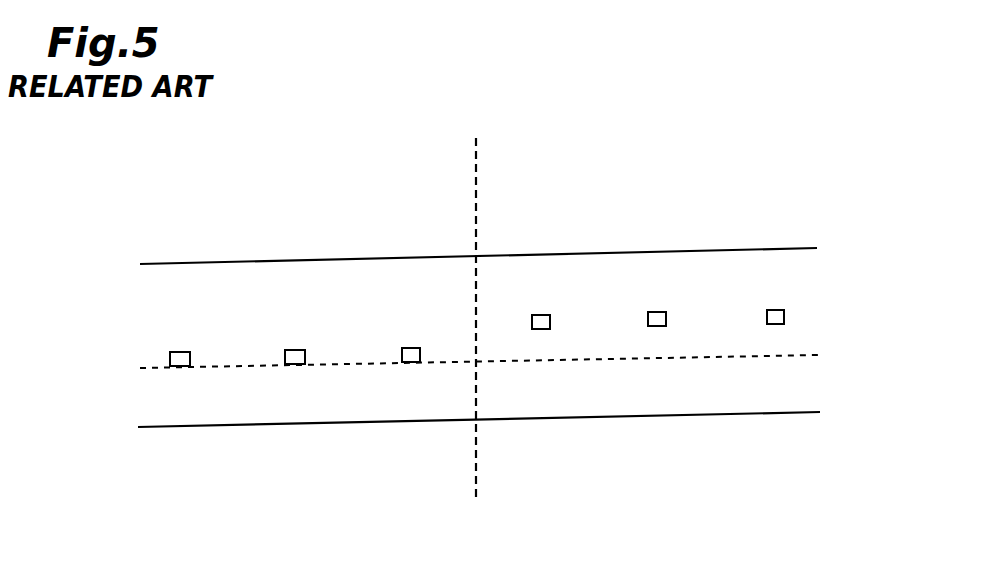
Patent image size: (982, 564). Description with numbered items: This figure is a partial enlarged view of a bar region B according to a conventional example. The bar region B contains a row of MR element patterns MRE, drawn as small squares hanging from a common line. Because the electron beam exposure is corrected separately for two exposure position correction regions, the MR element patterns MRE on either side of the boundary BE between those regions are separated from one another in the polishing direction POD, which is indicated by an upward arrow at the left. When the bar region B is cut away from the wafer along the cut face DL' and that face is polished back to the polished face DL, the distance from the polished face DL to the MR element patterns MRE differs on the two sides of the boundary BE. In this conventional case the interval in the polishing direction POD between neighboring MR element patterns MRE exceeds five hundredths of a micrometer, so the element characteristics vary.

The MR element pattern MRE is at (180, 352).
The boundary BE is at (476, 152).
The polished face DL is at (506, 342).
The cut face DL' is at (508, 400).
The bar region B is at (590, 420).
The polishing direction POD is at (102, 436).